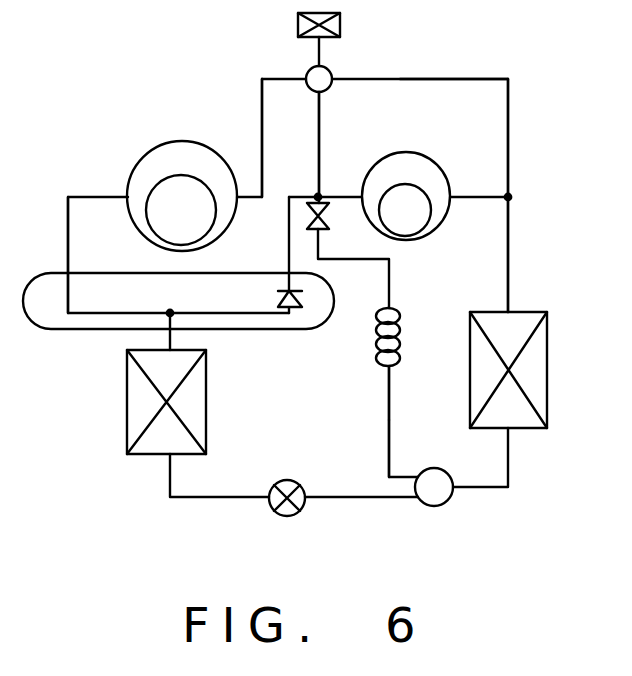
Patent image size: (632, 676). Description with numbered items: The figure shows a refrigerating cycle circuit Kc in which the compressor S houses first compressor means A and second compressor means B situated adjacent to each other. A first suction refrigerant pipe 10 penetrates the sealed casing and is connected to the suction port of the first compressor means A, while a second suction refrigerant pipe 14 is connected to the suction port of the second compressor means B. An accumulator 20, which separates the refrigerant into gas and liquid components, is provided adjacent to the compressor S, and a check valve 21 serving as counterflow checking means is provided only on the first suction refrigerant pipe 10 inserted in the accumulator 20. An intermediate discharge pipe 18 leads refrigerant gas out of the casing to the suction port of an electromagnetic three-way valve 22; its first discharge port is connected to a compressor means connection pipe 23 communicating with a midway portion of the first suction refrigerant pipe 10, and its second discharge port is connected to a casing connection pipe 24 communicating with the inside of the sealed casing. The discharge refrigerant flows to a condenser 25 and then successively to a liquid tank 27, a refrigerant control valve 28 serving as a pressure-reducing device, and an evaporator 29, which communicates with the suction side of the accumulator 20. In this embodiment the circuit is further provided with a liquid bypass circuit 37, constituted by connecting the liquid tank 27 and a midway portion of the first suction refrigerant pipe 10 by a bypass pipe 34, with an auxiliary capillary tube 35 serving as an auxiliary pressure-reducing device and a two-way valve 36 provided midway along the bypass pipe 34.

The first suction refrigerant pipe 10 is at (289, 248).
The second suction refrigerant pipe 14 is at (68, 233).
The intermediate discharge pipe 18 is at (262, 142).
The accumulator 20 is at (52, 329).
The check valve 21 is at (296, 317).
The electromagnetic three-way valve 22 is at (329, 70).
The compressor means connection pipe 23 is at (319, 136).
The casing connection pipe 24 is at (451, 79).
The condenser 25 is at (547, 363).
The liquid tank 27 is at (438, 506).
The refrigerant control valve 28 is at (300, 514).
The evaporator 29 is at (206, 406).
The bypass pipe 34 is at (389, 438).
The auxiliary capillary tube 35 is at (400, 360).
The two-way valve 36 is at (323, 230).
The liquid bypass circuit 37 is at (389, 402).
The second compressor means B is at (168, 140).
The compressor S is at (448, 163).
The first compressor means A is at (432, 233).
The refrigerating cycle circuit KC is at (530, 168).